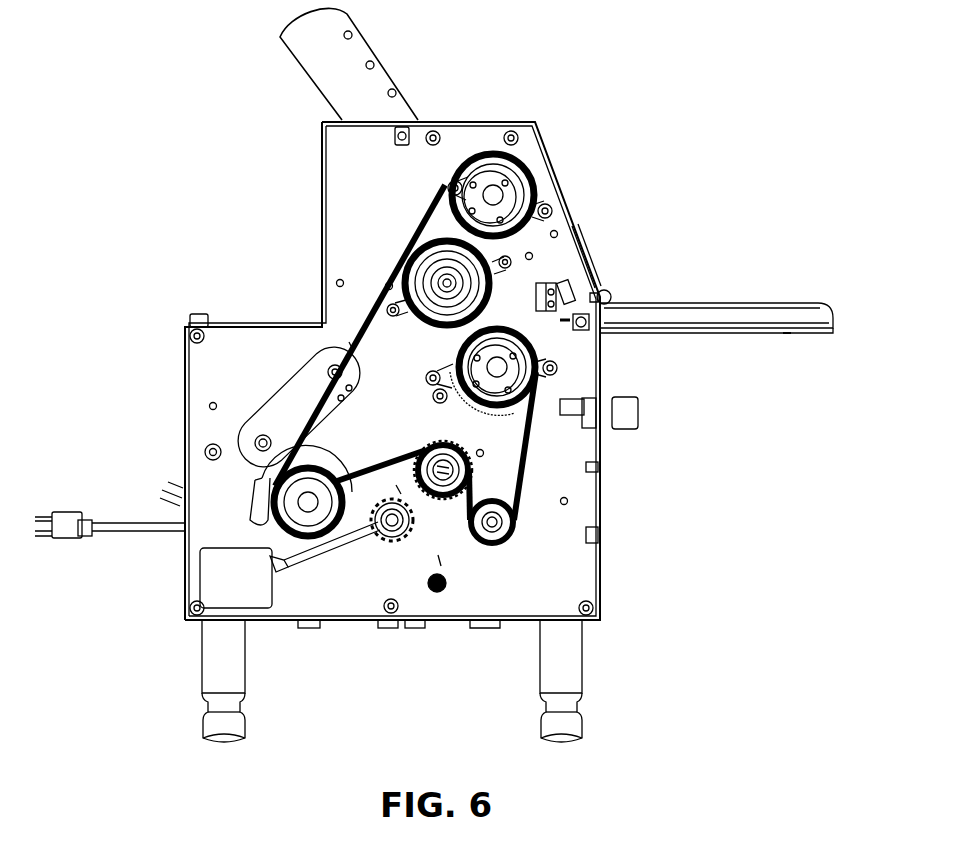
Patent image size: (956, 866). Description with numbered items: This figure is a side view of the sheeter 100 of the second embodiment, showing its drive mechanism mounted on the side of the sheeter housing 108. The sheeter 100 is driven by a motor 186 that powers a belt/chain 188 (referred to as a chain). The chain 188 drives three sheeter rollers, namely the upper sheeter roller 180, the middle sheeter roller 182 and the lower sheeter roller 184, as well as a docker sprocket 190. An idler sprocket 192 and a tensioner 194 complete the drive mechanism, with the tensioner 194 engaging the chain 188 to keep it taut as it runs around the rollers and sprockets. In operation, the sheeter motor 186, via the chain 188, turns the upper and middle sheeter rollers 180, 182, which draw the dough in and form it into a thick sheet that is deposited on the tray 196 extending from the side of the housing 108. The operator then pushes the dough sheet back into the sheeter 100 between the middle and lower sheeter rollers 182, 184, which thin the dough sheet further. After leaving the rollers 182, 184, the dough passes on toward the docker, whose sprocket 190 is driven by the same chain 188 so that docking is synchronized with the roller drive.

The sheeter 100 is at (622, 122).
The sheeter housing 108 is at (277, 325).
The upper sheeter roller 180 is at (526, 186).
The middle sheeter roller 182 is at (427, 262).
The lower sheeter roller 184 is at (540, 352).
The motor 186 is at (324, 472).
The belt/chain 188 is at (533, 437).
The docker sprocket 190 is at (470, 463).
The idler sprocket 192 is at (503, 537).
The tensioner 194 is at (390, 540).
The tray 196 is at (688, 332).